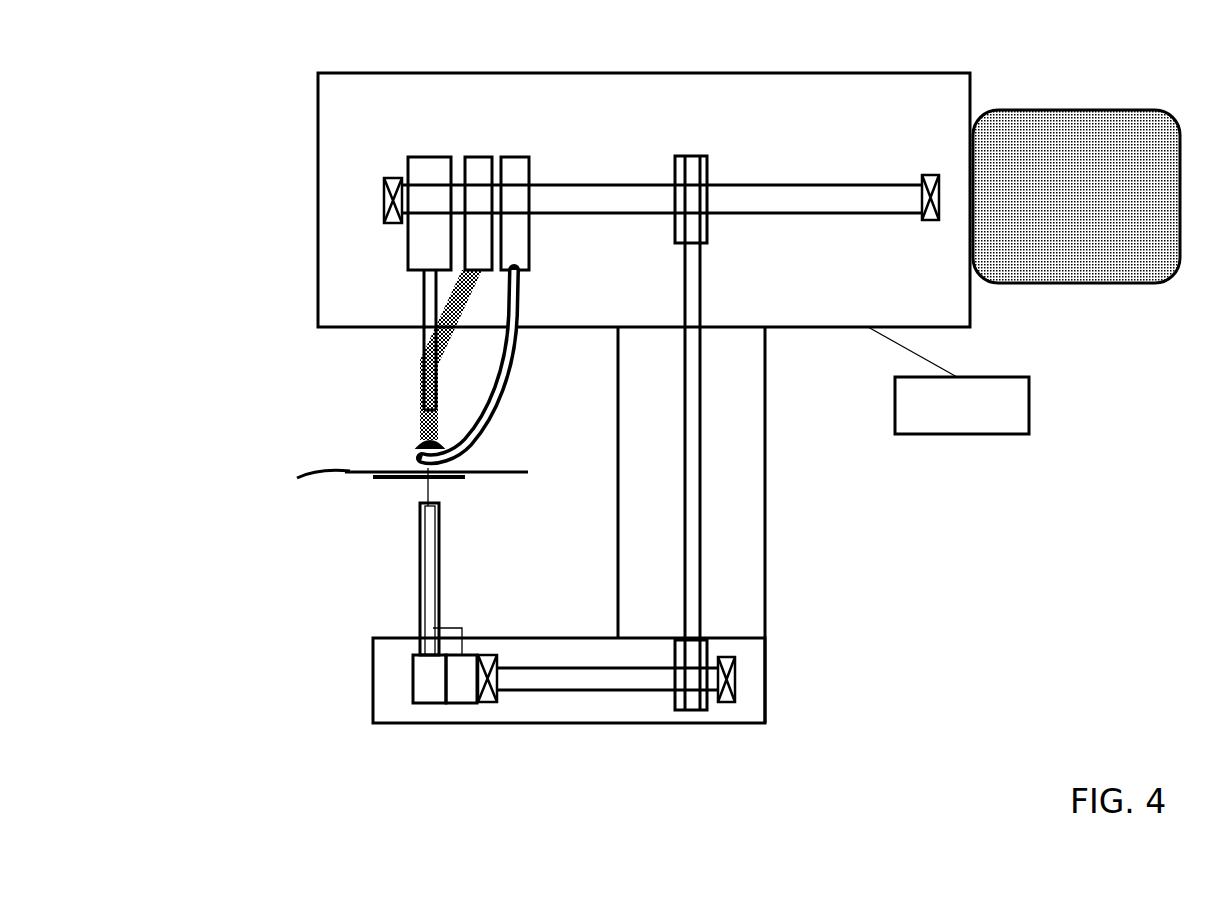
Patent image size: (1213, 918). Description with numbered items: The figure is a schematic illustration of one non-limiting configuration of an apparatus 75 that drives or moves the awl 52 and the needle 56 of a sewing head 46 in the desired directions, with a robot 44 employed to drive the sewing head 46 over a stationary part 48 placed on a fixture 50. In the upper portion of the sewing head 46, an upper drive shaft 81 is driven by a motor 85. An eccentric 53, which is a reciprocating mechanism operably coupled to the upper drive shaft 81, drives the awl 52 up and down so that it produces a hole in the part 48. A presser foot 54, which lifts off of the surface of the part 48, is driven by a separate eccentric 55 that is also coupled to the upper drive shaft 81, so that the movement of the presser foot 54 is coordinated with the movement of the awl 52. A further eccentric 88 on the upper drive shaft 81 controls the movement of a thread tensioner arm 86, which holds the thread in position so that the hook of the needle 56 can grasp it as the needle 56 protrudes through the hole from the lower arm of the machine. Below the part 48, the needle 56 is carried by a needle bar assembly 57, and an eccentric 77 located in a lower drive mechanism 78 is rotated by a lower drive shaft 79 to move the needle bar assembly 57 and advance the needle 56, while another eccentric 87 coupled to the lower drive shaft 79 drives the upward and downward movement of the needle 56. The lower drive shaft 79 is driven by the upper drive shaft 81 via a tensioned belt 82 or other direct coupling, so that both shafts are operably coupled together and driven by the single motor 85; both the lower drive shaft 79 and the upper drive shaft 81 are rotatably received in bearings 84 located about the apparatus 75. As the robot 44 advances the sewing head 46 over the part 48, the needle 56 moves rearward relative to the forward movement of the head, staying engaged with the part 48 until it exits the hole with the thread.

The robot 44 is at (1000, 427).
The sewing head 46 is at (774, 308).
The part 48 is at (310, 468).
The fixture 50 is at (453, 480).
The awl 52 is at (422, 430).
The eccentric 53 is at (412, 173).
The presser foot 54 is at (418, 442).
The eccentric 55 is at (472, 243).
The needle 56 is at (428, 523).
The needle bar assembly 57 is at (419, 583).
The apparatus 75 is at (868, 507).
The eccentric 77 is at (428, 707).
The lower drive mechanism 78 is at (372, 660).
The lower drive shaft 79 is at (592, 680).
The upper drive shaft 81 is at (810, 202).
The tensioned belt 82 is at (700, 458).
The bearings 84 is at (385, 212).
The motor 85 is at (1105, 223).
The thread tensioner arm 86 is at (503, 382).
The eccentric 87 is at (453, 707).
The eccentric 88 is at (517, 157).